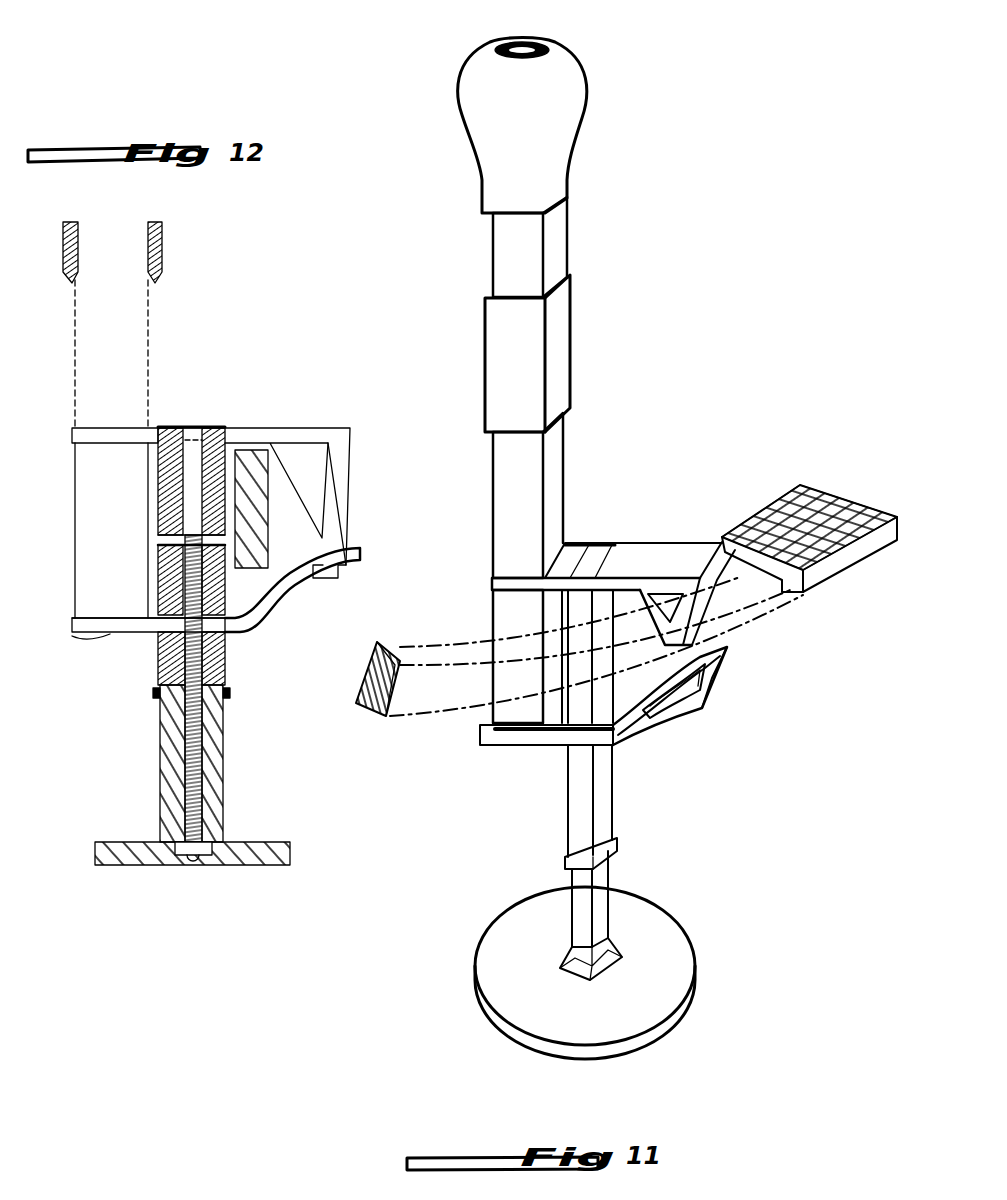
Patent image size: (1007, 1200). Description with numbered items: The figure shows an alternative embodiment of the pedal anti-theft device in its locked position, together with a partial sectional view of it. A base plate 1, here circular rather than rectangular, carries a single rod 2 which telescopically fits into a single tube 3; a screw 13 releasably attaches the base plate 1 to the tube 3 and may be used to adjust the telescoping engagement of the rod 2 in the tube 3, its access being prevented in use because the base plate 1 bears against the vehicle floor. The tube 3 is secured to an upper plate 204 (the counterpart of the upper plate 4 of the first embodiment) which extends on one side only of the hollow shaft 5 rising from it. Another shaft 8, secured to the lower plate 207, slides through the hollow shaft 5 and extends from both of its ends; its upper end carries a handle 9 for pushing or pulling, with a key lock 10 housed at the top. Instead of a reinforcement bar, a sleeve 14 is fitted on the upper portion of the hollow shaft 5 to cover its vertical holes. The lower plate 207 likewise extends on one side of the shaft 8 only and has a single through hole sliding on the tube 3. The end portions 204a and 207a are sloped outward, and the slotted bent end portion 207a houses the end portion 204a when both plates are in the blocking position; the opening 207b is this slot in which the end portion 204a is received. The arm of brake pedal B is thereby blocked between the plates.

In FIG. 12, the base plate 1 is at (267, 843).
In FIG. 11, the base plate 1 is at (650, 958).
In FIG. 12, the rod 2 is at (217, 757).
In FIG. 11, the rod 2 is at (598, 880).
In FIG. 12, the tube 3 is at (218, 659).
In FIG. 11, the tube 3 is at (603, 800).
In FIG. 12, the upper plate 4 is at (162, 247).
In FIG. 12, the hollow shaft 5 is at (150, 335).
In FIG. 11, the hollow shaft 5 is at (555, 485).
In FIG. 12, the shaft 8 is at (75, 505).
In FIG. 11, the shaft 8 is at (558, 233).
In FIG. 11, the handle 9 is at (555, 107).
In FIG. 11, the key lock 10 is at (524, 45).
In FIG. 12, the screw 13 is at (197, 858).
In FIG. 11, the sleeve 14 is at (553, 360).
In FIG. 12, the upper plate 204 is at (283, 440).
In FIG. 11, the upper plate 204 is at (630, 558).
In FIG. 12, the end portion of upper plate 204a is at (338, 478).
In FIG. 11, the end portion of upper plate 204a is at (702, 593).
In FIG. 12, the lower plate 207 is at (157, 633).
In FIG. 11, the lower plate 207 is at (545, 740).
In FIG. 12, the bent end portion of lower plate 207a is at (278, 565).
In FIG. 11, the bent end portion of lower plate 207a is at (713, 690).
In FIG. 11, the opening 207b is at (663, 690).
In FIG. 12, the brake pedal B is at (247, 464).
In FIG. 11, the brake pedal B is at (753, 502).